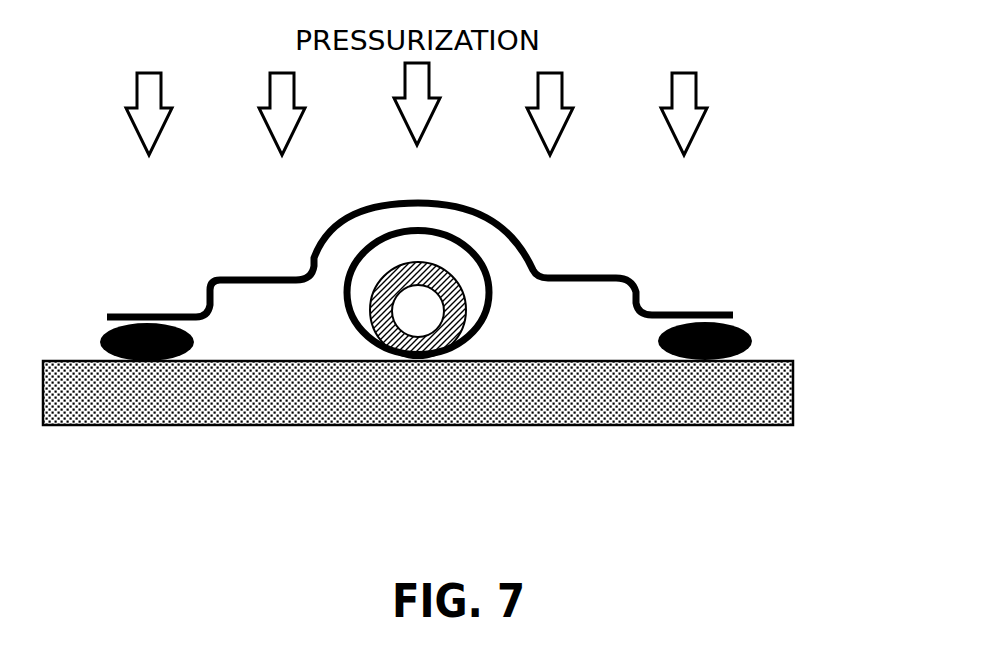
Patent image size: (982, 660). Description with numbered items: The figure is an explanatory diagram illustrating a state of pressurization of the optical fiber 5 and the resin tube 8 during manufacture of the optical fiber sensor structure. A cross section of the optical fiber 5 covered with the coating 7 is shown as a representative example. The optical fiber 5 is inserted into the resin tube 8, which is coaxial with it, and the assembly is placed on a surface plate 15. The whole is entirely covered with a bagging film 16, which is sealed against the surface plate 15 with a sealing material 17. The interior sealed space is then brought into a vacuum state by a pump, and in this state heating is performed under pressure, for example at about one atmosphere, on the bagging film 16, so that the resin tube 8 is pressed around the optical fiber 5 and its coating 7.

The optical fiber 5 is at (418, 313).
The coating 7 is at (470, 338).
The resin tube 8 is at (347, 268).
The surface plate 15 is at (493, 412).
The bagging film 16 is at (652, 312).
The sealing material 17 is at (760, 342).